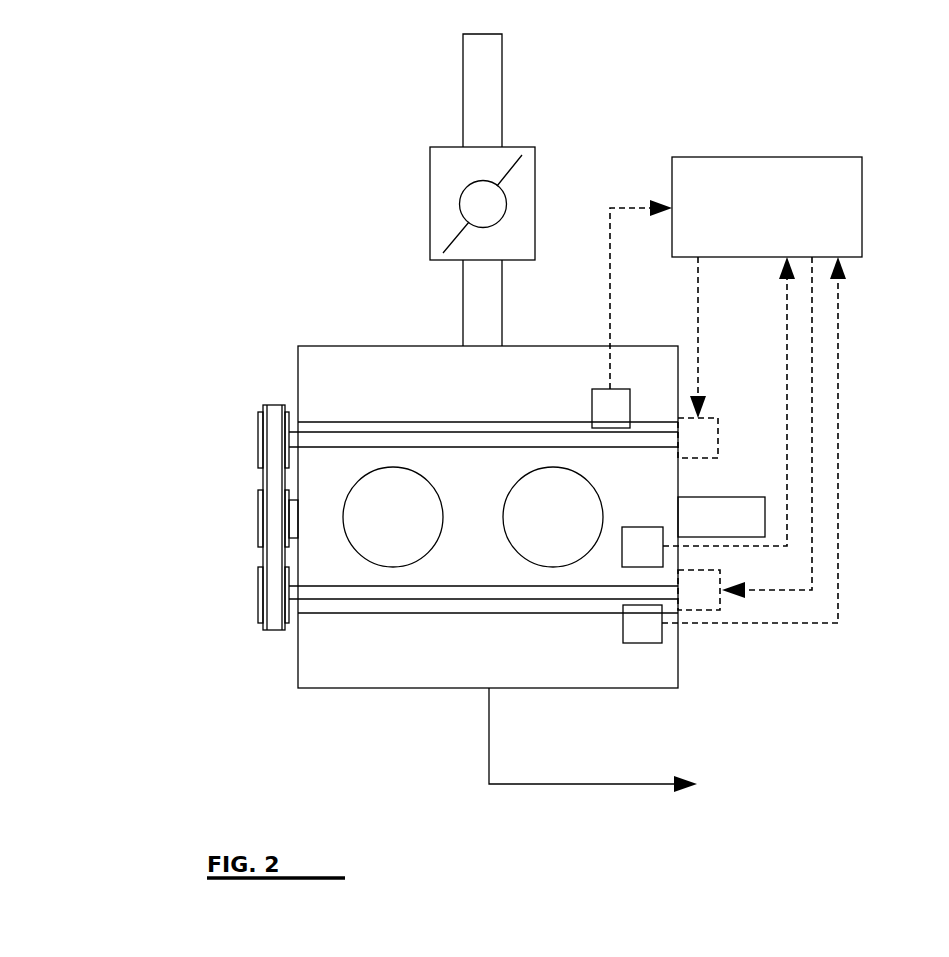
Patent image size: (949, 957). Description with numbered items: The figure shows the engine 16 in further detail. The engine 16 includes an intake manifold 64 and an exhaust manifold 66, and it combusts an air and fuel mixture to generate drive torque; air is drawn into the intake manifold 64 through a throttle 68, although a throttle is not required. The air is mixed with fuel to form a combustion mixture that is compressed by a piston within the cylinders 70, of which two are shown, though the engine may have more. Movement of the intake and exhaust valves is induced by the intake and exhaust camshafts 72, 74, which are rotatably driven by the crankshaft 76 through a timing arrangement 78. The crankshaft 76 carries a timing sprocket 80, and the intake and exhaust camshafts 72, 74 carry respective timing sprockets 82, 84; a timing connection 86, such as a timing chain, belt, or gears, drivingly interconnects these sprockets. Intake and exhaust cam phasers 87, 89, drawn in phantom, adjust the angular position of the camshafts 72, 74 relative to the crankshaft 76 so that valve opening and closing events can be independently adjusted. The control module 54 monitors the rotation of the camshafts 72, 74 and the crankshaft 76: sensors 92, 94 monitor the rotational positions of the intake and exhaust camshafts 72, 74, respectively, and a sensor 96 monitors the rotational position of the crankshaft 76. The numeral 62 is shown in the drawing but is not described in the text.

The engine 16 is at (275, 210).
The control module 54 is at (863, 192).
The engine 62 is at (323, 422).
The intake manifold 64 is at (325, 347).
The exhaust manifold 66 is at (298, 677).
The throttle 68 is at (430, 185).
The cylinders 70 is at (516, 483).
The intake camshaft 72 is at (438, 430).
The exhaust camshaft 74 is at (395, 599).
The crankshaft 76 is at (705, 497).
The timing arrangement 78 is at (200, 490).
The timing sprocket 80 is at (258, 510).
The timing sprocket 82 is at (258, 467).
The timing sprocket 84 is at (258, 573).
The timing connection 86 is at (267, 405).
The intake cam phaser 87 is at (720, 432).
The exhaust cam phaser 89 is at (722, 600).
The sensor 92 is at (592, 392).
The sensor 94 is at (632, 643).
The sensor 96 is at (642, 527).